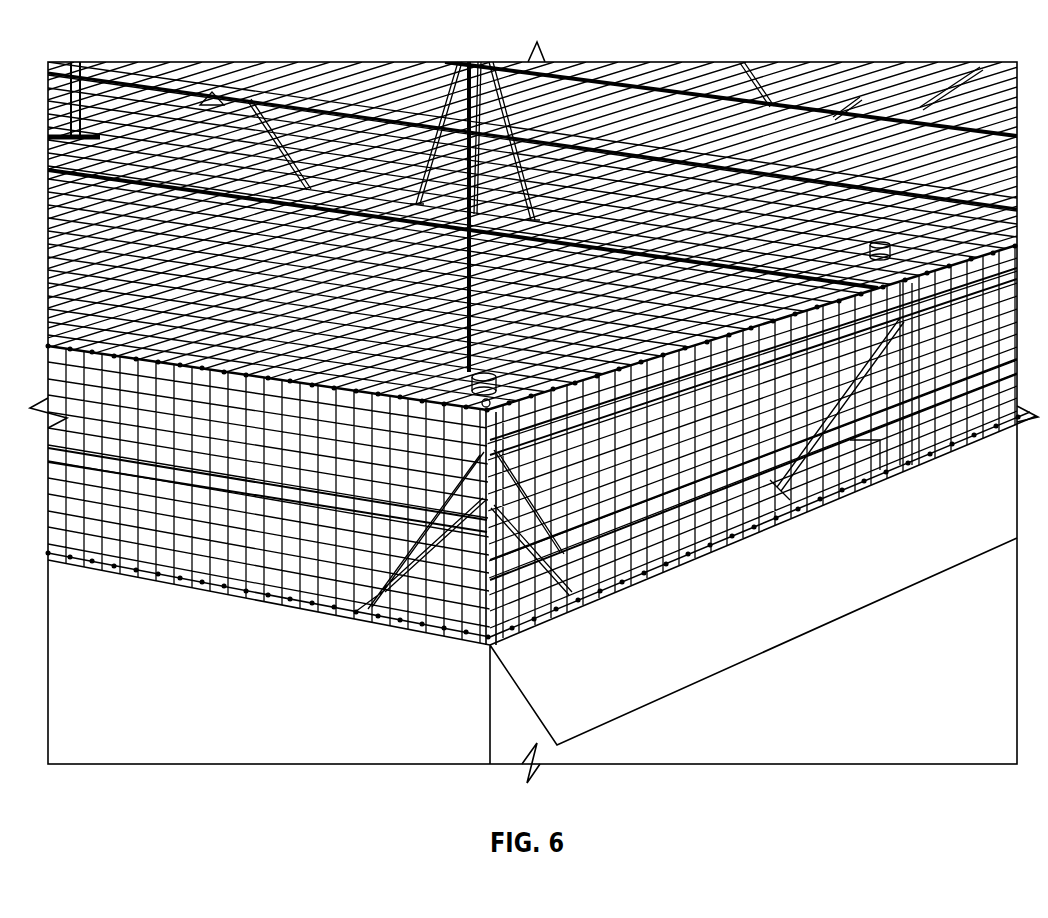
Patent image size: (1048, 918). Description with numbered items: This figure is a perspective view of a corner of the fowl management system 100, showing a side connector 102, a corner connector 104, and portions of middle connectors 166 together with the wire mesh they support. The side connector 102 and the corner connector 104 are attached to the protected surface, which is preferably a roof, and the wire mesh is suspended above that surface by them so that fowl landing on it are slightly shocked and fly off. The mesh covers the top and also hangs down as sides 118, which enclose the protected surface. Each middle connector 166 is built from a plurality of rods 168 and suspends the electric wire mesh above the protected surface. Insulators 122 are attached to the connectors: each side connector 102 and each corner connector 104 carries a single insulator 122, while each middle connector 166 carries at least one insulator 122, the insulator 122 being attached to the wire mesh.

The fowl management system 100 is at (818, 46).
The middle connector 166 is at (443, 86).
The rod 168 is at (436, 122).
The insulator 122 is at (490, 369).
The side connector 102 is at (922, 455).
The side 118 is at (183, 547).
The corner connector 104 is at (473, 632).